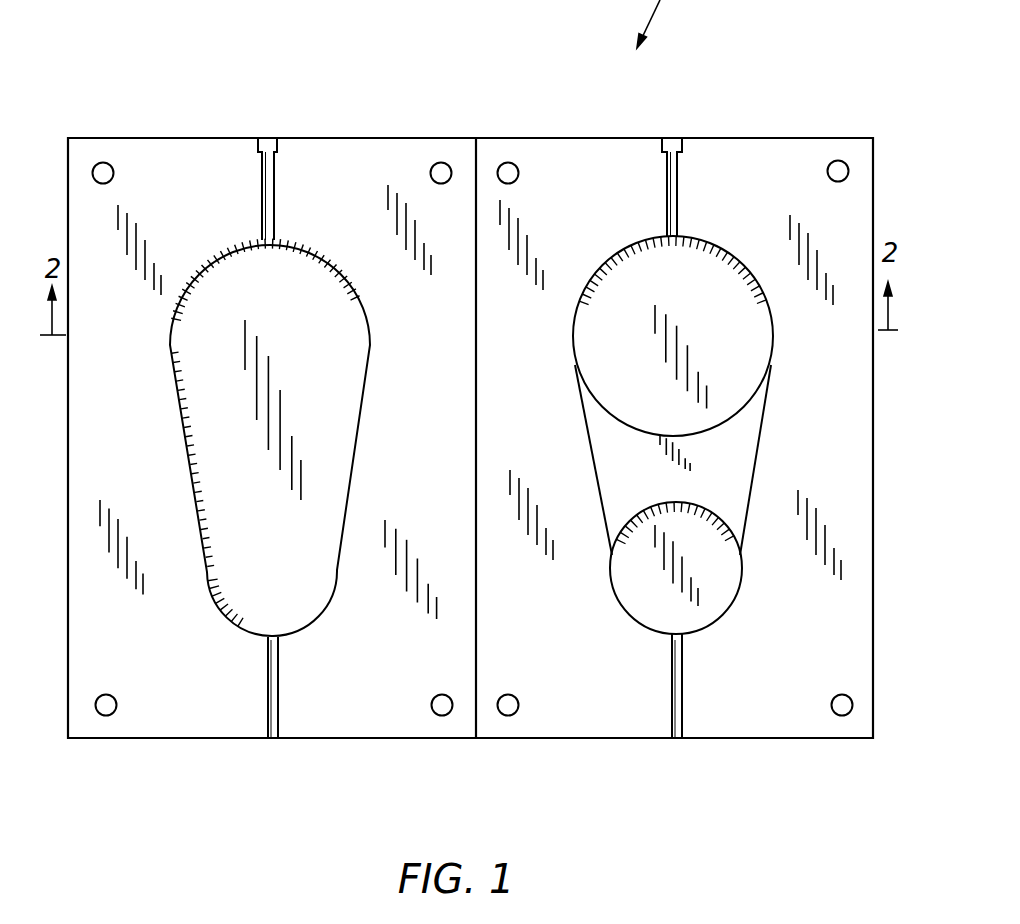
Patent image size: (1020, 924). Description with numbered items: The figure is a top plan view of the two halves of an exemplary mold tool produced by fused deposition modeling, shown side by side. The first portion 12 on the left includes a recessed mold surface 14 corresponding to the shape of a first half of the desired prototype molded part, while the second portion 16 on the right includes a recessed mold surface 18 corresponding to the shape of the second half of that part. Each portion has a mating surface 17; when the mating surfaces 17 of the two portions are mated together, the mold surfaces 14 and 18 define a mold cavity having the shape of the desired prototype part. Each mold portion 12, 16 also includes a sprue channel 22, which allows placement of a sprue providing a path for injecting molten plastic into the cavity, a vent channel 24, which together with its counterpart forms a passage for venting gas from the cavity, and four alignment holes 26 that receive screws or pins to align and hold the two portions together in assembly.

The first portion 12 is at (184, 222).
The recessed mold surface 14 is at (270, 303).
The second portion 16 is at (769, 185).
The mating surface 17 is at (373, 663).
The recessed mold surface 18 is at (657, 293).
The sprue channel 22 is at (267, 145).
The vent channel 24 is at (276, 738).
The alignment holes 26 is at (101, 170).